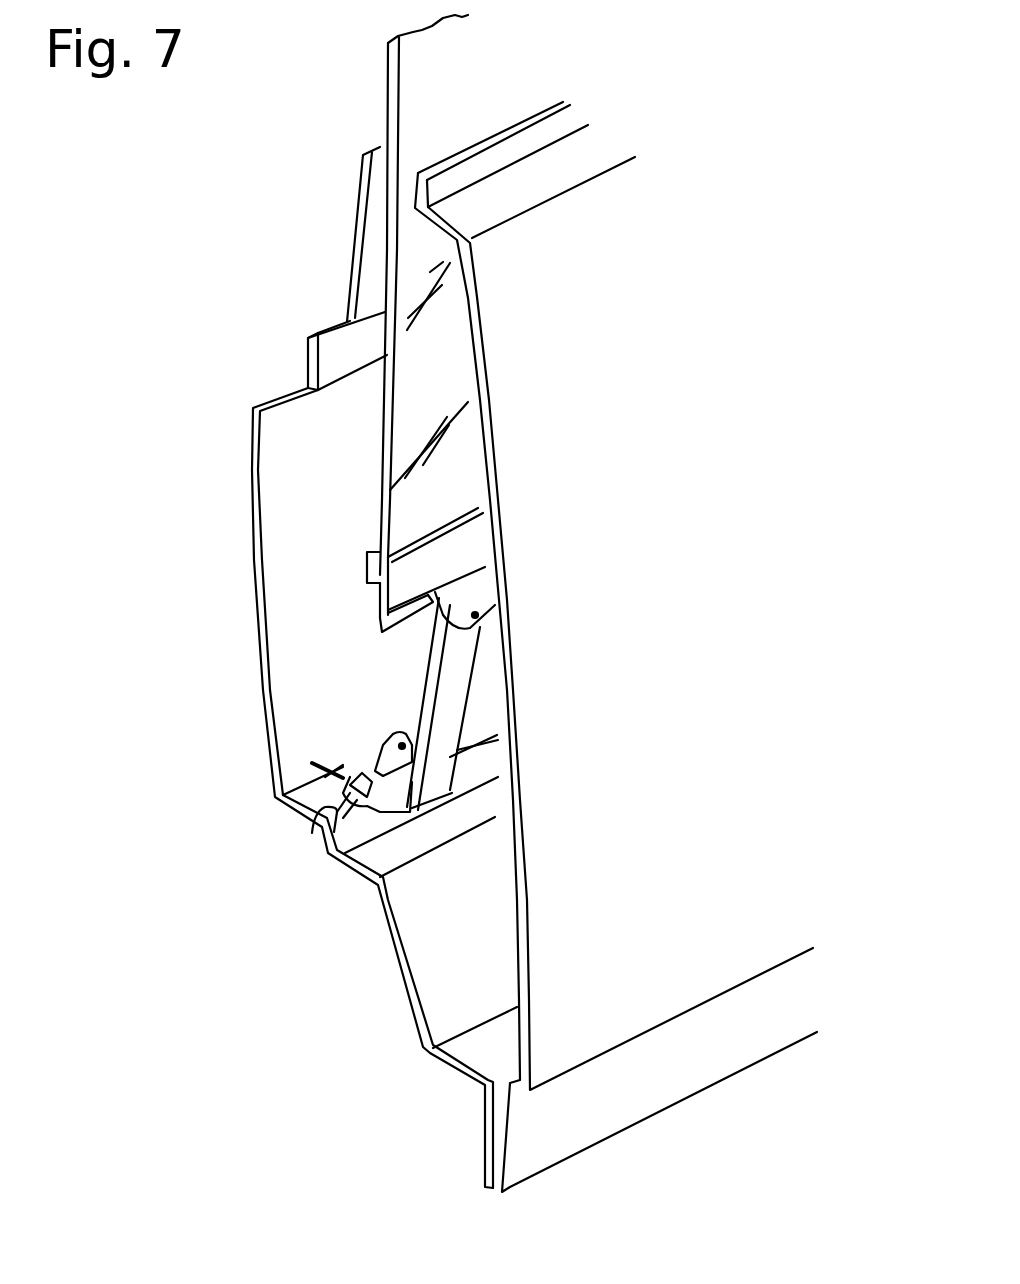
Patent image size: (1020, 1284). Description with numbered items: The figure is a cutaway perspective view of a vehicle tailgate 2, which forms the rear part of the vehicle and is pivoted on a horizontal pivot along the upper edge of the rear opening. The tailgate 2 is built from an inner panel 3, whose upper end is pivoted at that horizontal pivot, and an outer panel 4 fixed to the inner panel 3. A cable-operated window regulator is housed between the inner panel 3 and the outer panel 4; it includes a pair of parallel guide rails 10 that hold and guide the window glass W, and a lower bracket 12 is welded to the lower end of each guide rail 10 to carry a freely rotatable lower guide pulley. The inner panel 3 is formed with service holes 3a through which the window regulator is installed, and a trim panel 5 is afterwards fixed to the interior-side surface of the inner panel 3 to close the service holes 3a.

The window glass W is at (388, 116).
The tailgate 2 is at (246, 274).
The inner panel 3 is at (352, 287).
The service hole 3a is at (350, 375).
The outer panel 4 is at (503, 362).
The trim panel 5 is at (252, 412).
The guide rail 10 is at (463, 710).
The lower bracket 12 is at (392, 797).